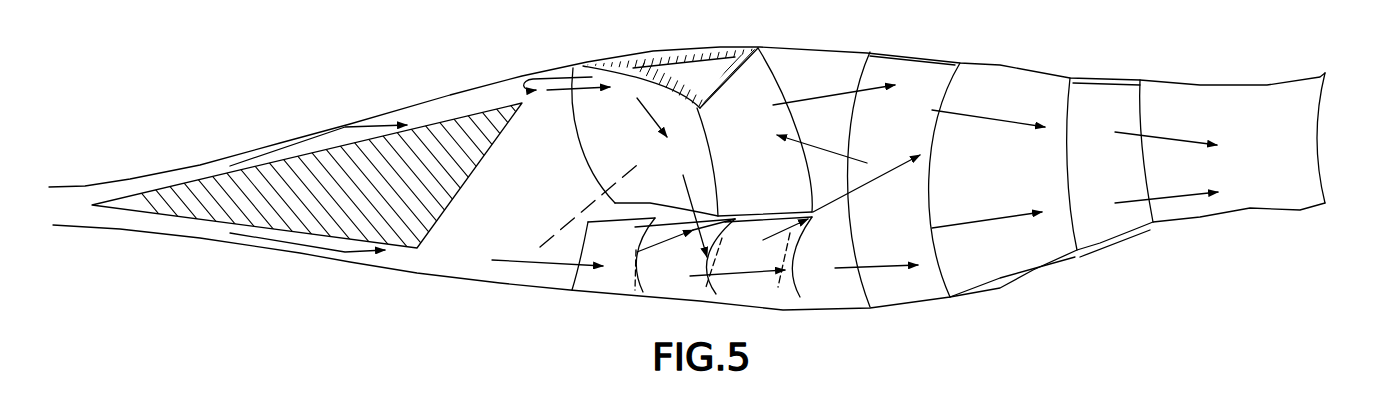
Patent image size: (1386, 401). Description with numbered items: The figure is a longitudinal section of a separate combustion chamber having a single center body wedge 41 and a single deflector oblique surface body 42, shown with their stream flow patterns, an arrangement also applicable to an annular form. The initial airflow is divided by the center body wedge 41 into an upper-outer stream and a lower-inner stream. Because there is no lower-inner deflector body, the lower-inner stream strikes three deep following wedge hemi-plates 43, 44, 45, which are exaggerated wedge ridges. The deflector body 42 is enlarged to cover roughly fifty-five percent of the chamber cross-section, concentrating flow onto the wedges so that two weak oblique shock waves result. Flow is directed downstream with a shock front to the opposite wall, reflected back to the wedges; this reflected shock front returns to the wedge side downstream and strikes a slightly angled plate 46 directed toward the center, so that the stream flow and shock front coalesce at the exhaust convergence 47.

The center body wedge 41 is at (220, 214).
The deflector oblique surface body 42 is at (617, 103).
The wedge hemi-plate 43 is at (613, 278).
The wedge hemi-plate 44 is at (667, 278).
The wedge hemi-plate 45 is at (758, 290).
The slightly angled plate 46 is at (763, 75).
The exhaust convergence 47 is at (1285, 147).